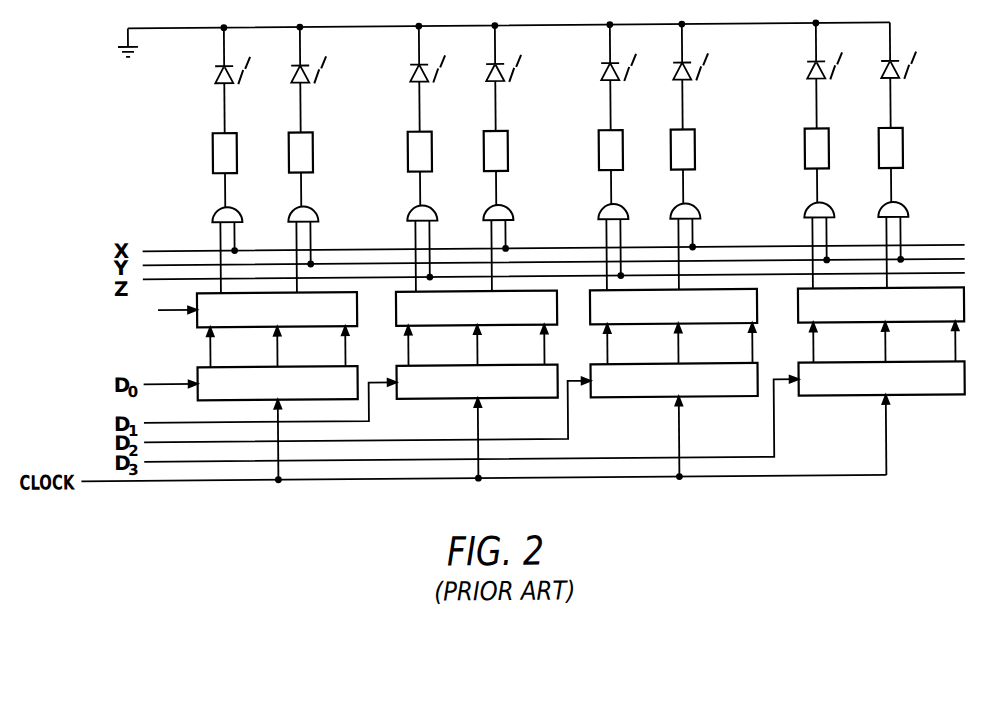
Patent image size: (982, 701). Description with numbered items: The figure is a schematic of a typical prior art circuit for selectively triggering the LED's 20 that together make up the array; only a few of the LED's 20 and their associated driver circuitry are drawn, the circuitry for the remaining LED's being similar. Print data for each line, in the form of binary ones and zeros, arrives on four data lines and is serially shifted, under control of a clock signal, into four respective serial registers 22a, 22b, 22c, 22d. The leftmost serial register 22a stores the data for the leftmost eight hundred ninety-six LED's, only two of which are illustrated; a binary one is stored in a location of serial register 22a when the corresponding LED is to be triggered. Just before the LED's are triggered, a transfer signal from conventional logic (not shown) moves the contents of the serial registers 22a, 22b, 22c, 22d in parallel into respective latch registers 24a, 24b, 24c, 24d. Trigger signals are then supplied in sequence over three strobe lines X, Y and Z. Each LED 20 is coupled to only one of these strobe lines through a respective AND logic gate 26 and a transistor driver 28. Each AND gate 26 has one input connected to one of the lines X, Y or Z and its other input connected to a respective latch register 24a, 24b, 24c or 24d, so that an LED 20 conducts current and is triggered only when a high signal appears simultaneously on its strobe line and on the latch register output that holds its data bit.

The LED 20 is at (220, 80).
The transistor driver 28 is at (215, 148).
The AND logic gate 26 is at (216, 210).
The serial register 22a is at (197, 366).
The serial register 22b is at (397, 399).
The serial register 22c is at (591, 399).
The serial register 22d is at (799, 399).
The latch register 24a is at (197, 325).
The latch register 24b is at (396, 308).
The latch register 24c is at (590, 308).
The latch register 24d is at (797, 308).